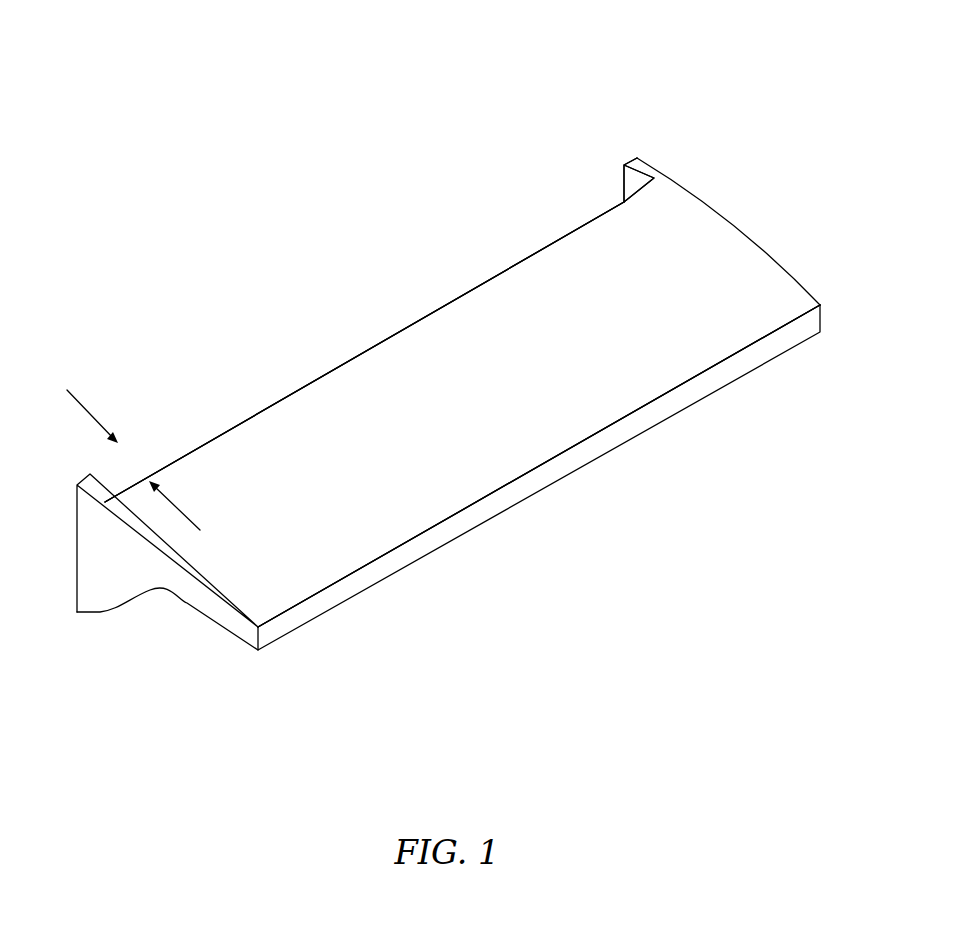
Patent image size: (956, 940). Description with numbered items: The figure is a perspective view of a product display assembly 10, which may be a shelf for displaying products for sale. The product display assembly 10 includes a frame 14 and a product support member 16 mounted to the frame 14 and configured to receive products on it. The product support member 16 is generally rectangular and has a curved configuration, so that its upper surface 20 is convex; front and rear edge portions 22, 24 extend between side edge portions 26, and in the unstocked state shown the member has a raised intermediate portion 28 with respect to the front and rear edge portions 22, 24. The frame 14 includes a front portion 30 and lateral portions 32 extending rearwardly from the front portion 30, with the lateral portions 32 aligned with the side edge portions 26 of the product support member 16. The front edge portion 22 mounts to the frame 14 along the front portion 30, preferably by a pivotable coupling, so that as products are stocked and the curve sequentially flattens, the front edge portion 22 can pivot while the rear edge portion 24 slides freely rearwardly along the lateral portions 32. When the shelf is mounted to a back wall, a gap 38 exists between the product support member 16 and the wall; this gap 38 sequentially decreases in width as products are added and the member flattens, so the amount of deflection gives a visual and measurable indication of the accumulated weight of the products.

The product display assembly 10 is at (471, 136).
The frame 14 is at (643, 182).
The product support member 16 is at (467, 462).
The upper surface 20 is at (622, 386).
The front edge portion 22 is at (558, 445).
The rear edge portion 24 is at (432, 327).
The side edge portions 26 is at (757, 238).
The raised intermediate portion 28 is at (623, 303).
The front portion 30 is at (393, 562).
The lateral portions 32 is at (637, 188).
The gap 38 is at (160, 440).